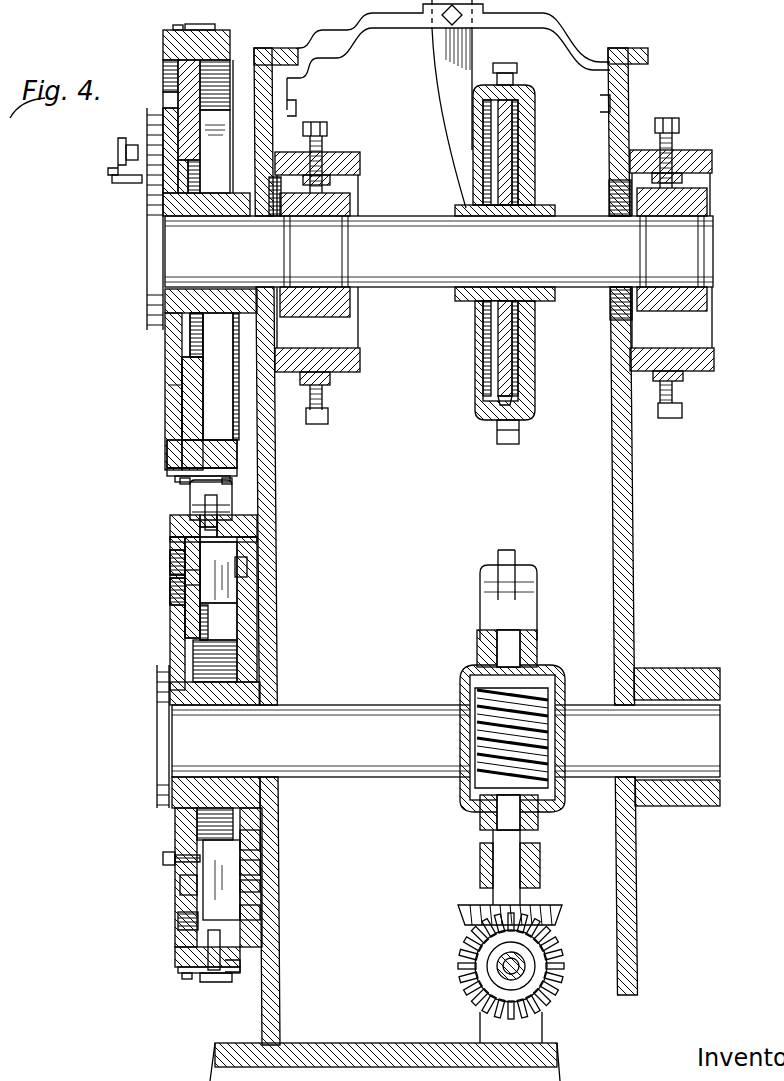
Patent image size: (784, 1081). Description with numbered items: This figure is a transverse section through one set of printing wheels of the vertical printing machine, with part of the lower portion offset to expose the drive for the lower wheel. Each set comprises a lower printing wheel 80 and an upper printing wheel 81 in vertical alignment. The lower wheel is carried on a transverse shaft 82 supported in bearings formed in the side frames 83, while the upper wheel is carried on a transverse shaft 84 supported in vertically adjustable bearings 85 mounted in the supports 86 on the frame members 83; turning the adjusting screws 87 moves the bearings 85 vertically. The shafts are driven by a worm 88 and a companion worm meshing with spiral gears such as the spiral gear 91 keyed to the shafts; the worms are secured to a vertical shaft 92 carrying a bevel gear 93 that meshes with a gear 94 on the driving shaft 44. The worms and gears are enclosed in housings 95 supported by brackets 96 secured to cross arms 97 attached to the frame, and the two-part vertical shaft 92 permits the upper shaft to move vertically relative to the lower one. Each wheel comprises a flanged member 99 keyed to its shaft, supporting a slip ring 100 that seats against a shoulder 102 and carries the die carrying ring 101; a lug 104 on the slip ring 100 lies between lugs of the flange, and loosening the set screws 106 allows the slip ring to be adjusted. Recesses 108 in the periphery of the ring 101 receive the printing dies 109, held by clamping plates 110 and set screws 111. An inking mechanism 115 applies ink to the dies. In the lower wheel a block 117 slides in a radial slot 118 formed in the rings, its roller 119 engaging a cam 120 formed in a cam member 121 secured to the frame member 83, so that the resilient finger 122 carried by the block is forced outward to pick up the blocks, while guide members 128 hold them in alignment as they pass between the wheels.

The driving shaft 44 is at (520, 965).
The lower printing wheel 80 is at (176, 597).
The upper printing wheel 81 is at (162, 407).
The transverse shaft 82 is at (185, 745).
The side frame 83 is at (630, 106).
The transverse shaft 84 is at (180, 268).
The vertically adjustable bearing 85 is at (355, 200).
The support 86 is at (362, 360).
The adjusting screw 87 is at (328, 138).
The worm 88 is at (478, 788).
The spiral gear 91 is at (514, 180).
The vertical shaft 92 is at (483, 862).
The bevel gear 93 is at (460, 912).
The gear 94 is at (460, 945).
The housing 95 is at (537, 170).
The bracket 96 is at (440, 70).
The cross arm 97 is at (552, 26).
The flanged member 99 is at (185, 358).
The slip ring 100 is at (172, 449).
The die carrying ring 101 is at (162, 44).
The shoulder 102 is at (185, 346).
The lug 104 is at (175, 892).
The set screw 106 is at (163, 858).
The recess 108 is at (235, 968).
The printing die 109 is at (192, 482).
The clamping plate 110 is at (172, 466).
The set screw 111 is at (185, 479).
The inking mechanism 115 is at (107, 151).
The block 117 is at (200, 561).
The radial slot 118 is at (180, 607).
The roller 119 is at (186, 575).
The cam 120 is at (282, 903).
The cam member 121 is at (282, 840).
The resilient finger 122 is at (170, 526).
The guide member 128 is at (205, 500).